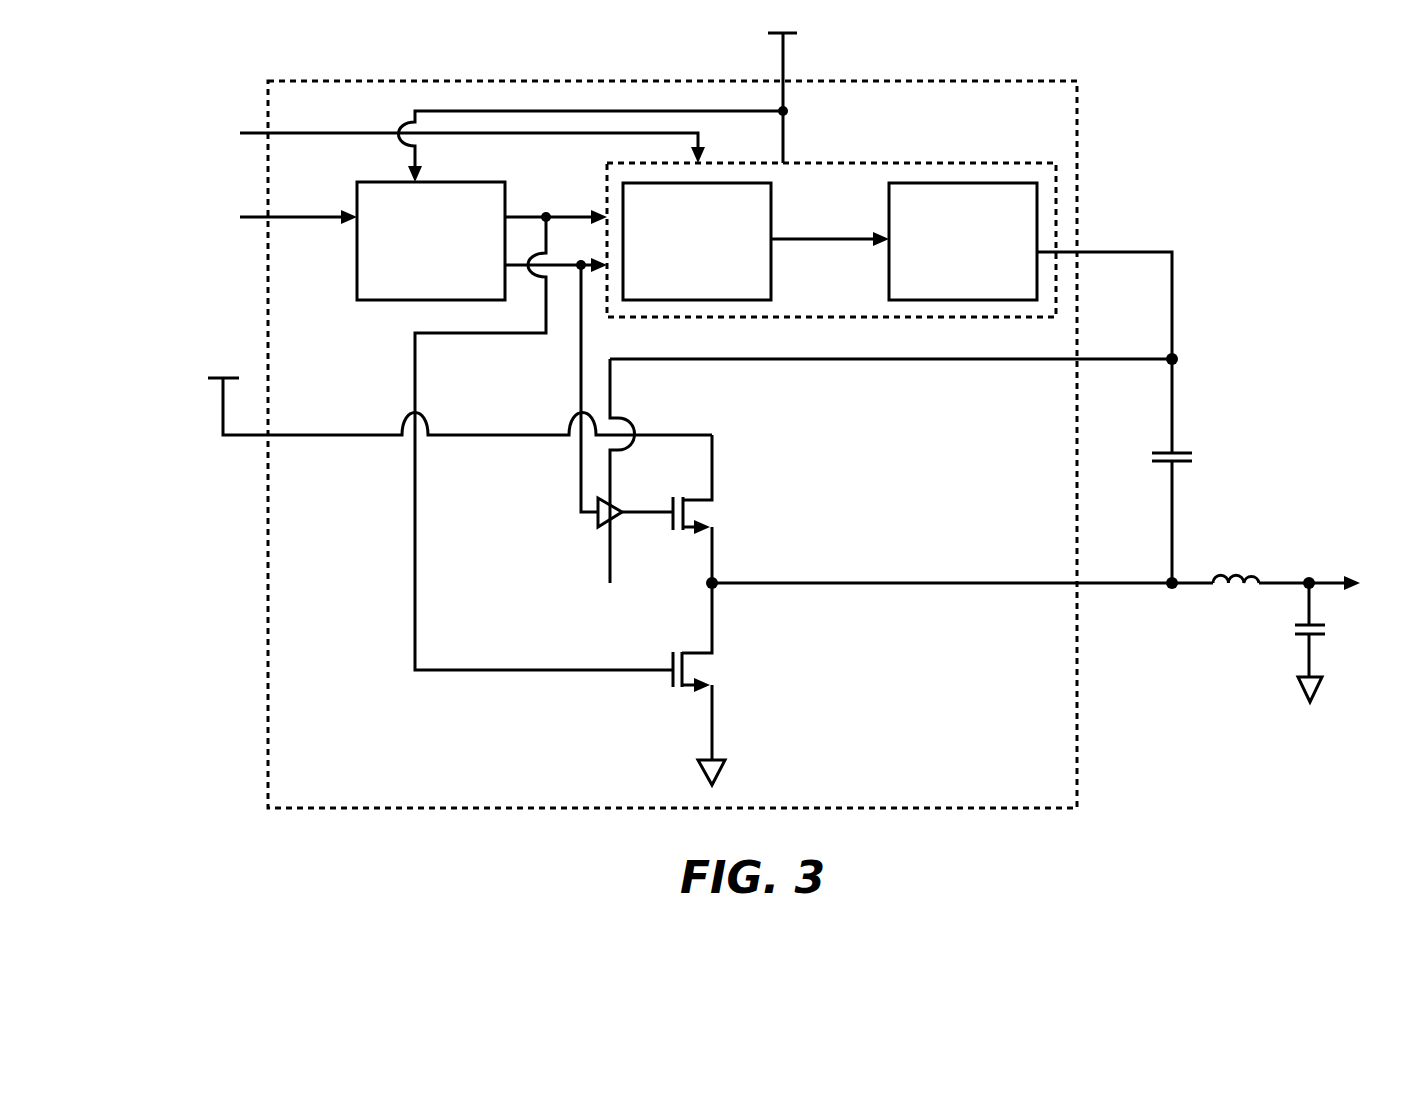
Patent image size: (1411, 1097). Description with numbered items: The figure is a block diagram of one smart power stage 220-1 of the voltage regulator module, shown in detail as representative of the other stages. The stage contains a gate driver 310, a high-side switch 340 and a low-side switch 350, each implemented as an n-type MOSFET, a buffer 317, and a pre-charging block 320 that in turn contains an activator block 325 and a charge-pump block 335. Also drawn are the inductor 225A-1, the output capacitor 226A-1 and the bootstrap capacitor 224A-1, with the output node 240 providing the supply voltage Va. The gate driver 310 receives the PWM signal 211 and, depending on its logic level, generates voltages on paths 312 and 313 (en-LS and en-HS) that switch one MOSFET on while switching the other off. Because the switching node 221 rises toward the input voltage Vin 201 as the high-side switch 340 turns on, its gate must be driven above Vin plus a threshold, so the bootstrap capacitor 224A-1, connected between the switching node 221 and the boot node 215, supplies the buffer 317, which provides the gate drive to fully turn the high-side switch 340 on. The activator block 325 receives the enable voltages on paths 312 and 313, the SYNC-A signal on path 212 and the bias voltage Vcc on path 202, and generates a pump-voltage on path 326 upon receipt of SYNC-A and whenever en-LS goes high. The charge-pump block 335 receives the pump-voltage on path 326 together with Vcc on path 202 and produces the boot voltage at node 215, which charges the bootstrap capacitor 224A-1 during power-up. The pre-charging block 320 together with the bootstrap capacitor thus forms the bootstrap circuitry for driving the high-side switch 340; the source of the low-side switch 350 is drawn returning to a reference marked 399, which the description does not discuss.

The smart power stage 220-1 is at (414, 66).
The path 202 is at (623, 91).
The path 212 is at (240, 133).
The signal PWMA-1 211 is at (240, 217).
The gate driver 310 is at (431, 241).
The path 312 is at (522, 212).
The path 313 is at (581, 376).
The pre-charging block 320 is at (1000, 148).
The activator block 325 is at (697, 241).
The path 326 is at (818, 238).
The charge-pump block 335 is at (963, 241).
The node BOOTA-1 215 is at (1174, 357).
The bootstrap capacitor 224A-1 is at (1208, 425).
The inductor 225A-1 is at (1254, 542).
The node 240 is at (1356, 578).
The node SWA-1 221 is at (1170, 585).
The output capacitor 226A-1 is at (1290, 638).
The high-side switch 340 is at (718, 522).
The buffer 317 is at (601, 523).
The low-side switch 350 is at (716, 672).
The ground 399 is at (722, 758).
The Vin 201 is at (435, 391).